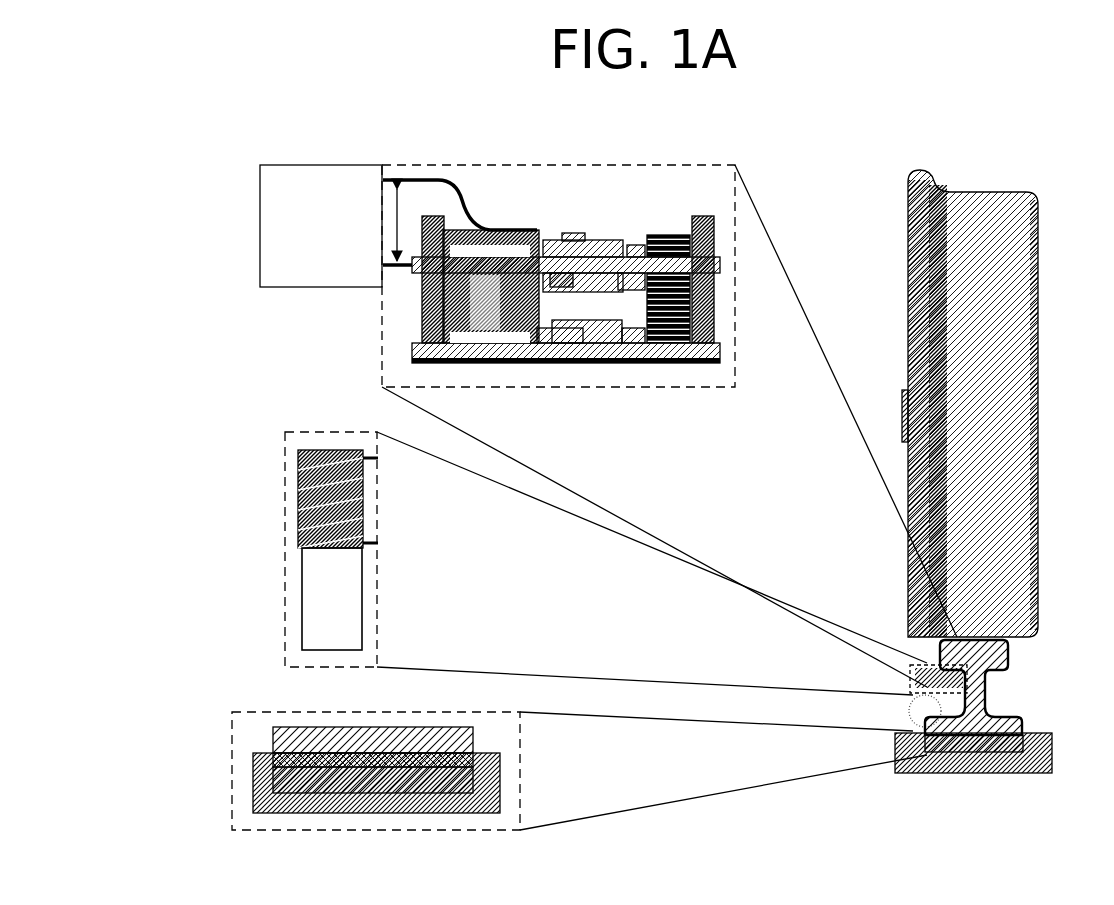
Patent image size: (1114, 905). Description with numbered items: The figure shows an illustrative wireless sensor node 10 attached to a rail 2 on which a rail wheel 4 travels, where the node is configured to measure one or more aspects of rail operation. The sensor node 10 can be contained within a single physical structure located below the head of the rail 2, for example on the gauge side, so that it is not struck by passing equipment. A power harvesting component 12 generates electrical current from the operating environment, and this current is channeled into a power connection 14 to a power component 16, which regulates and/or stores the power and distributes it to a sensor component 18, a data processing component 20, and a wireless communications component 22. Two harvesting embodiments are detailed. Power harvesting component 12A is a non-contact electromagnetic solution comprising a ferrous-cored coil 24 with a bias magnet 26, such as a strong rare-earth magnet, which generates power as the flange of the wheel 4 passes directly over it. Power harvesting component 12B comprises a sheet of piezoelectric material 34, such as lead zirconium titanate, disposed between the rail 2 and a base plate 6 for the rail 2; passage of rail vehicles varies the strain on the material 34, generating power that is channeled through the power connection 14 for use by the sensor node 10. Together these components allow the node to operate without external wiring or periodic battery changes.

The wireless sensor node 10 is at (788, 165).
The power harvesting component 12 is at (311, 278).
The power harvesting component 12A is at (352, 431).
The power harvesting component 12B is at (385, 711).
The power connection 14 is at (400, 225).
The power component 16 is at (507, 230).
The sensor component 18 is at (613, 376).
The data processing component 20 is at (589, 224).
The wireless communications component 22 is at (671, 224).
The ferrous-cored coil 24 is at (365, 507).
The bias magnet 26 is at (363, 602).
The rail 2 is at (443, 729).
The rail wheel 4 is at (987, 192).
The base plate 6 is at (475, 780).
The piezoelectric material 34 is at (253, 760).